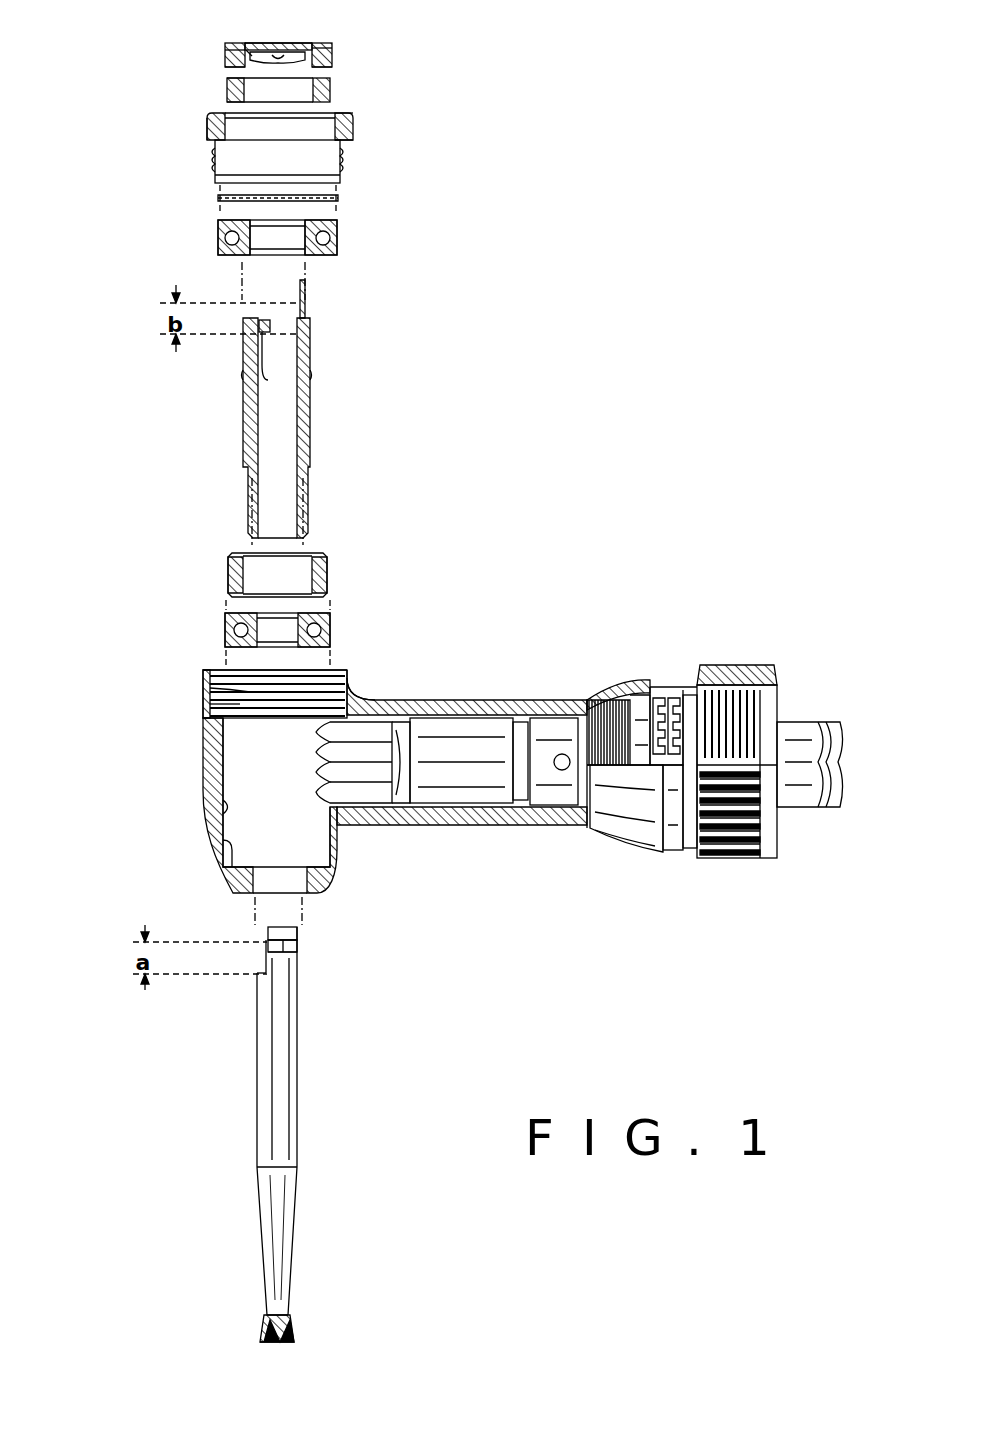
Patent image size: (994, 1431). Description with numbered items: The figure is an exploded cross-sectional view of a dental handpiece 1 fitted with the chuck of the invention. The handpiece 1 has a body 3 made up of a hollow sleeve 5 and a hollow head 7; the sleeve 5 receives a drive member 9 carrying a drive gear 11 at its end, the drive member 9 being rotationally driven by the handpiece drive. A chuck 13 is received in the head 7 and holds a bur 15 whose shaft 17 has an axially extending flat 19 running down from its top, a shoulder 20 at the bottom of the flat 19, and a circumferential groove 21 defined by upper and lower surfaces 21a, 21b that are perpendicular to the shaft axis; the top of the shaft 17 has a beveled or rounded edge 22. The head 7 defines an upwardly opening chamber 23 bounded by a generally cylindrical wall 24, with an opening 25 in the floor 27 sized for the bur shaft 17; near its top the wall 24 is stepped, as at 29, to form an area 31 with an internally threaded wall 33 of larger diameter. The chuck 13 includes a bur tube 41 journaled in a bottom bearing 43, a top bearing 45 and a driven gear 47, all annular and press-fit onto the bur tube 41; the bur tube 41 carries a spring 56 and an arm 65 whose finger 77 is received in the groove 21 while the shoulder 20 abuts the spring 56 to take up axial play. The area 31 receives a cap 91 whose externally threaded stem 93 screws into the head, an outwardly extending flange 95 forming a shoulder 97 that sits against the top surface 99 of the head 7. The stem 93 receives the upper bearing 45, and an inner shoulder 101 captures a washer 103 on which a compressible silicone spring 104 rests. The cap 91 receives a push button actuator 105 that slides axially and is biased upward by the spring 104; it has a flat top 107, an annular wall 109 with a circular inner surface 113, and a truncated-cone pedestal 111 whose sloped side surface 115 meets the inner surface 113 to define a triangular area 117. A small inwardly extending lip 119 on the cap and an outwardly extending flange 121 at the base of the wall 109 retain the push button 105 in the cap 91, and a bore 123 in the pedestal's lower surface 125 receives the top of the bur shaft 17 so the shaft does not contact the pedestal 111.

The handpiece 1 is at (404, 505).
The body 3 is at (481, 772).
The hollow sleeve 5 is at (425, 700).
The hollow head 7 is at (228, 793).
The drive member 9 is at (482, 762).
The drive gear 11 is at (365, 778).
The chuck 13 is at (293, 409).
The bur 15 is at (315, 1120).
The shaft 17 is at (297, 1118).
The axially extending flat 19 is at (267, 950).
The shoulder 20 is at (258, 972).
The groove 21 is at (297, 950).
The upper groove surface 21a is at (297, 958).
The lower groove surface 21b is at (298, 945).
The beveled or rounded edge 22 is at (297, 930).
The upwardly opening chamber 23 is at (250, 757).
The cylindrical wall 24 is at (232, 807).
The opening 25 is at (255, 895).
The floor 27 is at (242, 846).
The step 29 is at (218, 706).
The area (opening) 31 is at (236, 680).
The internally threaded wall 33 is at (218, 688).
The bur tube 41 is at (311, 447).
The bottom bearing 43 is at (332, 625).
The top bearing 45 is at (338, 236).
The driven gear 47 is at (330, 572).
The spring 56 is at (248, 358).
The bur tube arm 65 is at (302, 310).
The finger 77 is at (270, 378).
The cap (ring) 91 is at (362, 130).
The externally threaded stem 93 is at (340, 160).
The outwardly extending flange 95 is at (345, 118).
The cap shoulder 97 is at (345, 140).
The top surface of the head 99 is at (350, 668).
The inner shoulder 101 is at (222, 166).
The washer 103 is at (222, 198).
The spring (silicone disk) 104 is at (228, 100).
The push button actuator 105 is at (343, 50).
The flat top 107 is at (318, 40).
The annular wall 109 is at (325, 62).
The pedestal 111 is at (228, 56).
The inner surface 113 is at (333, 80).
The sloped side surface 115 is at (335, 52).
The triangularly shaped area 117 is at (250, 70).
The inwardly extending lip 119 is at (212, 130).
The outwardly extending flange 121 is at (245, 62).
The bore 123 is at (250, 46).
The lower surface 125 is at (282, 50).